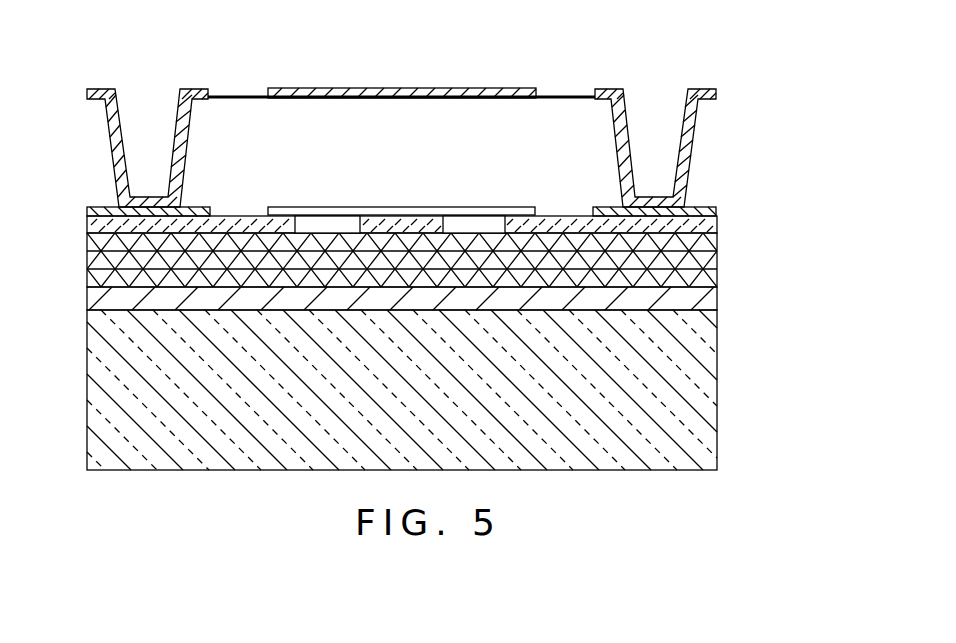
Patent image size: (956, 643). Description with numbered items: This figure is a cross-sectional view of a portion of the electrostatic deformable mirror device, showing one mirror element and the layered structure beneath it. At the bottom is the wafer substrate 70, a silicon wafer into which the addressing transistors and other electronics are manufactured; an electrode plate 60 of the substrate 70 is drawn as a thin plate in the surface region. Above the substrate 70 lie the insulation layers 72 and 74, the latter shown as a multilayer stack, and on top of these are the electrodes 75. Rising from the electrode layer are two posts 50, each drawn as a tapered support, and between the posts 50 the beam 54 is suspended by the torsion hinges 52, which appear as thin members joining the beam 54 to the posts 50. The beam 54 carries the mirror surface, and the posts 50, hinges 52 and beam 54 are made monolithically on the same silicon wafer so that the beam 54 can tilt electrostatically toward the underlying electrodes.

The post 50 is at (707, 92).
The torsion hinge 52 is at (242, 96).
The beam 54 is at (373, 92).
The electrode plate 60 is at (393, 215).
The substrate 70 is at (665, 438).
The insulation layer 72 is at (717, 302).
The insulation layer 74 is at (745, 268).
The electrodes 75 is at (708, 208).